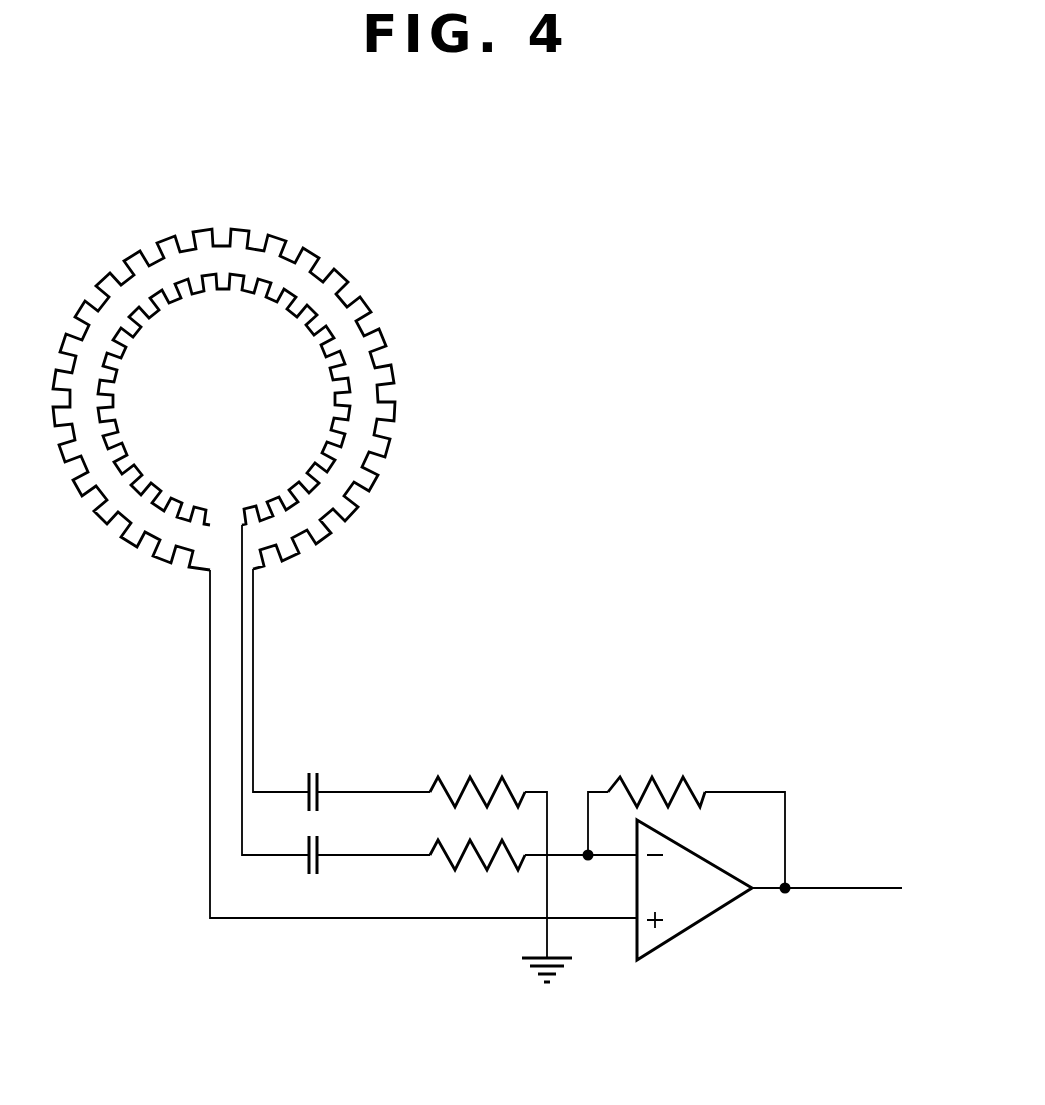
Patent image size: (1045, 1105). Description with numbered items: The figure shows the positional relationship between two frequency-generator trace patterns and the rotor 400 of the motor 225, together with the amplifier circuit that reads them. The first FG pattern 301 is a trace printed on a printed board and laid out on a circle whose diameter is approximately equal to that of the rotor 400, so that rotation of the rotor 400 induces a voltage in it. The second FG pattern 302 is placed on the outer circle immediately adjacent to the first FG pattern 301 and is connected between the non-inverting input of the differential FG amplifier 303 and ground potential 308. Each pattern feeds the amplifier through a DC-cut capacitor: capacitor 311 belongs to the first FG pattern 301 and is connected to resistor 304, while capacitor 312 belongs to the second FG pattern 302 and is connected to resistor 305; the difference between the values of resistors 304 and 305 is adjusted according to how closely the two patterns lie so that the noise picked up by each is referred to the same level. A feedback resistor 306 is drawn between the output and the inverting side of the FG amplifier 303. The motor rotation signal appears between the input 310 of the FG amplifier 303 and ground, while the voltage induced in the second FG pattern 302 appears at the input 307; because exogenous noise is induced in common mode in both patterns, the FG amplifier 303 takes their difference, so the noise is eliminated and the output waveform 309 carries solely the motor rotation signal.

The motor 225 is at (260, 352).
The first FG pattern 301 is at (338, 470).
The second FG pattern 302 is at (385, 333).
The FG amplifier 303 is at (723, 908).
The resistor 304 is at (452, 787).
The resistor 305 is at (445, 862).
The feedback resistor 306 is at (668, 783).
The inverting input 307 is at (610, 922).
The ground potential 308 is at (540, 933).
The output waveform 309 is at (862, 888).
The input of the FG amplifier 310 is at (575, 800).
The capacitor 311 is at (315, 770).
The capacitor 312 is at (315, 830).
The rotor 400 is at (182, 413).